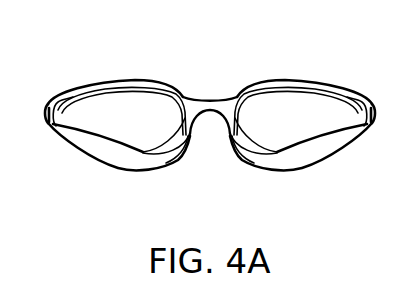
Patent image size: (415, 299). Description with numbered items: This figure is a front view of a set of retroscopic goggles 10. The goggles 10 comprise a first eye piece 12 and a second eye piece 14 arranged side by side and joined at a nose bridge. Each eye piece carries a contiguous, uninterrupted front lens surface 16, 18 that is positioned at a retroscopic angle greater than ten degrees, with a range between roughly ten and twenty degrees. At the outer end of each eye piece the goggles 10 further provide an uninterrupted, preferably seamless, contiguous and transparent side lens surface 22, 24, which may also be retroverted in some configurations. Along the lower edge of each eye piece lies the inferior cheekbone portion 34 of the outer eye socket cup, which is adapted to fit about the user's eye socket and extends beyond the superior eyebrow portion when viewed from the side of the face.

The goggles 10 is at (237, 43).
The first eye piece 12 is at (313, 78).
The second eye piece 14 is at (102, 78).
The front lens surface 16 is at (280, 130).
The front lens surface 18 is at (137, 130).
The side lens surface 22 is at (348, 113).
The side lens surface 24 is at (69, 113).
The inferior cheekbone portion 34 is at (142, 172).